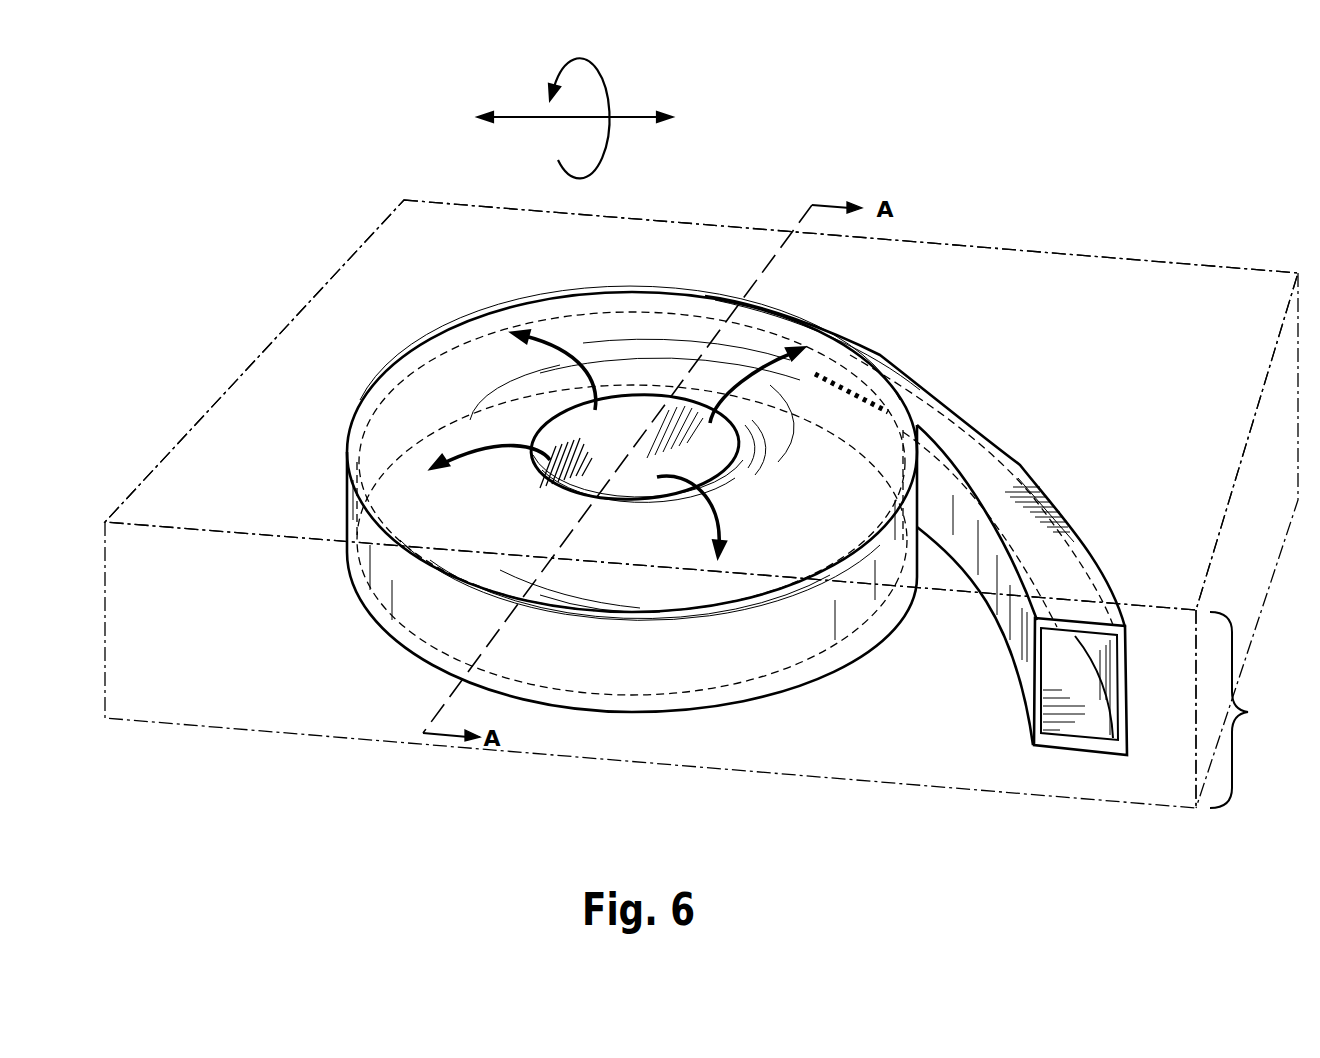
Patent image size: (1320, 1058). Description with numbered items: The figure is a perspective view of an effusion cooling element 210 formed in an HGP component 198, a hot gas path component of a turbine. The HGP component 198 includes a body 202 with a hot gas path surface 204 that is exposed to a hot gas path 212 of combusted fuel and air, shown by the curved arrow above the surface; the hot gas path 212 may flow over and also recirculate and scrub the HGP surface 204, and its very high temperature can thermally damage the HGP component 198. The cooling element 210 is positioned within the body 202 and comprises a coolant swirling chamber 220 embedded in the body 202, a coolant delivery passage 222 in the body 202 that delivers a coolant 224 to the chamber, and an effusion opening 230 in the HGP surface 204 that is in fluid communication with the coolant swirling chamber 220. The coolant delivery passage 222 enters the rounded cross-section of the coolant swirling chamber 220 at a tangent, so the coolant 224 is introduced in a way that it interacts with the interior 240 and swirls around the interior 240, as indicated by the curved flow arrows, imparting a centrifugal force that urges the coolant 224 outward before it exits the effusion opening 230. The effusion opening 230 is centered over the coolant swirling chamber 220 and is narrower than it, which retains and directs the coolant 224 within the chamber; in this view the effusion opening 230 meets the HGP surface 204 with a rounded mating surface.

The HGP component 198 is at (205, 391).
The body 202 is at (1248, 709).
The hot gas path surface 204 is at (701, 405).
The effusion cooling element 210 is at (790, 309).
The hot gas path 212 is at (636, 92).
The coolant swirling chamber 220 is at (745, 657).
The coolant delivery passage 222 is at (1073, 707).
The coolant 224 is at (852, 382).
The effusion opening 230 is at (655, 397).
The interior 240 is at (632, 503).